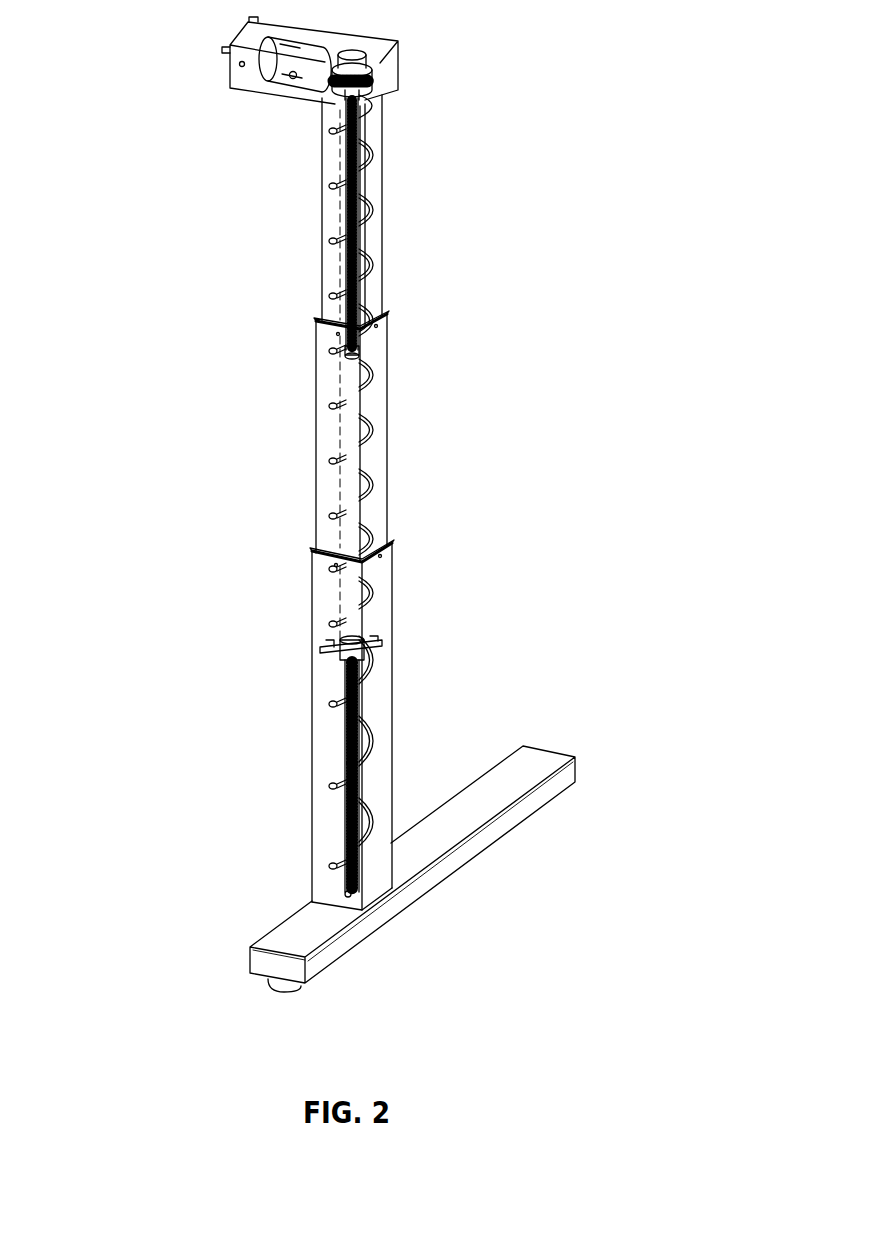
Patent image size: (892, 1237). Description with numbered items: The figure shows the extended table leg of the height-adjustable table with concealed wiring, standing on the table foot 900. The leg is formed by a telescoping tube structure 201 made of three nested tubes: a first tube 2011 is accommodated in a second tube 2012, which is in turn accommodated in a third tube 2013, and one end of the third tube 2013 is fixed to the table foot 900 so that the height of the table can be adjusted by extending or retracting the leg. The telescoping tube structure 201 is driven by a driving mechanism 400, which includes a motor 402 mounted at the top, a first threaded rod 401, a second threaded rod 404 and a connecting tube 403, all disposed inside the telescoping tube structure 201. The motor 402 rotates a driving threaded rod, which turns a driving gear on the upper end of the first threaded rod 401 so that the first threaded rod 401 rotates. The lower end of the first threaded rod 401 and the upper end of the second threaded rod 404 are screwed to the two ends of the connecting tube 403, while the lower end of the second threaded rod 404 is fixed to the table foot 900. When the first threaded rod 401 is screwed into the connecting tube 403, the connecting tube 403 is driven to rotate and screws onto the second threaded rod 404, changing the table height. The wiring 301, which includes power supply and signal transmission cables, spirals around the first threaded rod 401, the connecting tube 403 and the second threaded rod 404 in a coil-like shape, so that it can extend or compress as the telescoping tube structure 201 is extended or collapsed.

The telescoping tube structure 201 is at (140, 293).
The first tube 2011 is at (327, 293).
The second tube 2012 is at (327, 492).
The third tube 2013 is at (322, 685).
The driving mechanism 400 is at (553, 97).
The first threaded rod 401 is at (360, 202).
The motor 402 is at (357, 57).
The connecting tube 403 is at (347, 422).
The second threaded rod 404 is at (362, 670).
The wiring 301 is at (372, 745).
The table foot 900 is at (560, 753).